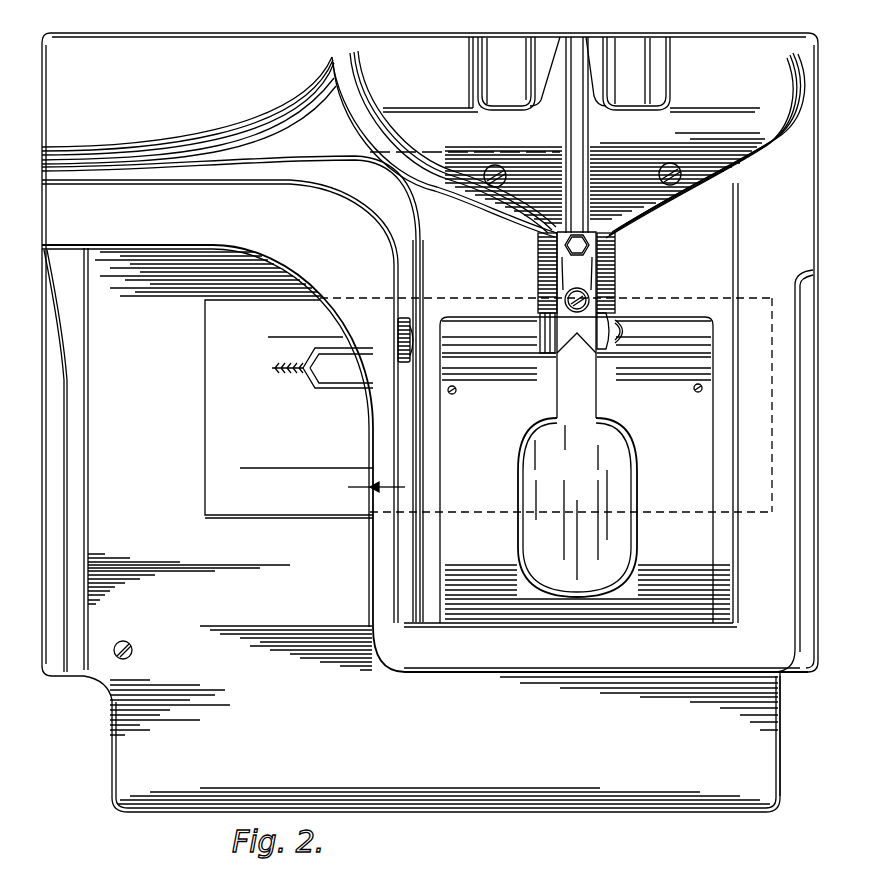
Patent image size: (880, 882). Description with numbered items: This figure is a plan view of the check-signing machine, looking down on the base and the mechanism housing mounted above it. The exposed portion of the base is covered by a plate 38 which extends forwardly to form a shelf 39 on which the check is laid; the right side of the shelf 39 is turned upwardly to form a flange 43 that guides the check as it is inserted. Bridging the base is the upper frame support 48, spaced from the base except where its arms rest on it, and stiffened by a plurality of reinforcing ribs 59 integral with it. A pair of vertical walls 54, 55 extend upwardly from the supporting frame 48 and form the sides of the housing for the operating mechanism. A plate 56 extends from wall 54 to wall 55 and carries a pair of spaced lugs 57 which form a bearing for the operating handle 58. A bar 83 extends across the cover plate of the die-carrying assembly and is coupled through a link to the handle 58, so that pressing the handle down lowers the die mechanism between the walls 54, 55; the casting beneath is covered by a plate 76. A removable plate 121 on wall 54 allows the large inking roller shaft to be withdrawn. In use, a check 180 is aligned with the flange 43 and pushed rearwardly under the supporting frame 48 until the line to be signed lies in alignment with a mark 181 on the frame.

The plate 38 is at (121, 634).
The shelf 39 is at (112, 772).
The flange 43 is at (778, 770).
The upper frame support 48 is at (571, 74).
The vertical wall 54 is at (438, 434).
The vertical wall 55 is at (718, 434).
The plate 56 is at (531, 253).
The spaced lugs 57 is at (545, 283).
The operating handle 58 is at (561, 400).
The reinforcing ribs 59 is at (190, 165).
The plate 76 is at (557, 507).
The bar 83 is at (477, 343).
The removable plate 121 is at (398, 332).
The check 180 is at (205, 497).
The mark 181 is at (395, 490).